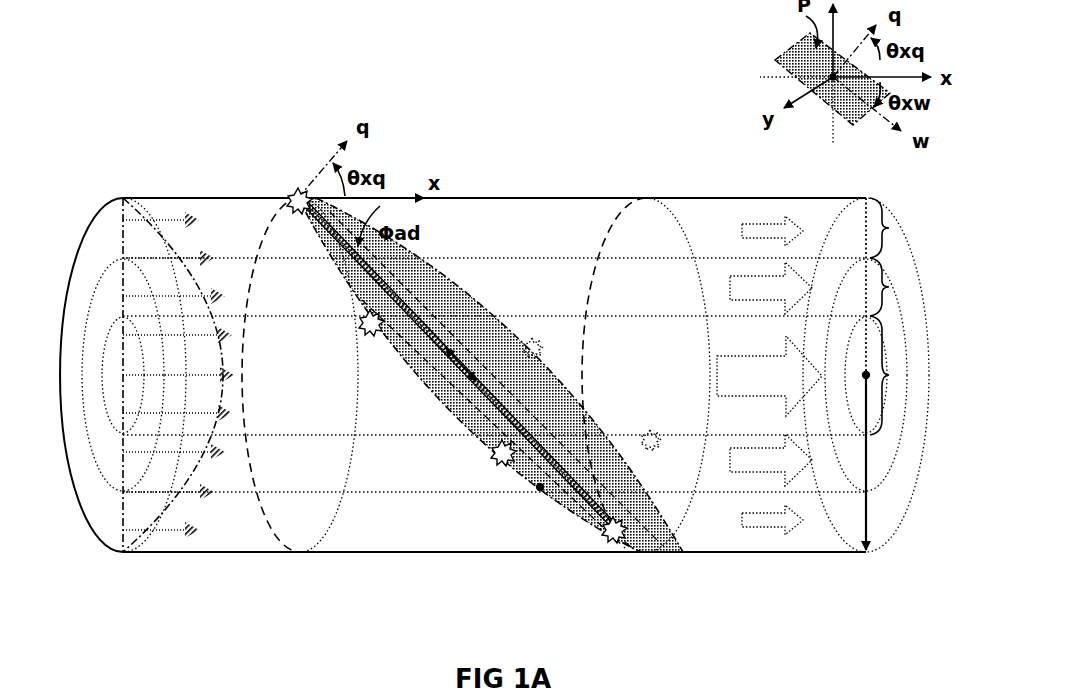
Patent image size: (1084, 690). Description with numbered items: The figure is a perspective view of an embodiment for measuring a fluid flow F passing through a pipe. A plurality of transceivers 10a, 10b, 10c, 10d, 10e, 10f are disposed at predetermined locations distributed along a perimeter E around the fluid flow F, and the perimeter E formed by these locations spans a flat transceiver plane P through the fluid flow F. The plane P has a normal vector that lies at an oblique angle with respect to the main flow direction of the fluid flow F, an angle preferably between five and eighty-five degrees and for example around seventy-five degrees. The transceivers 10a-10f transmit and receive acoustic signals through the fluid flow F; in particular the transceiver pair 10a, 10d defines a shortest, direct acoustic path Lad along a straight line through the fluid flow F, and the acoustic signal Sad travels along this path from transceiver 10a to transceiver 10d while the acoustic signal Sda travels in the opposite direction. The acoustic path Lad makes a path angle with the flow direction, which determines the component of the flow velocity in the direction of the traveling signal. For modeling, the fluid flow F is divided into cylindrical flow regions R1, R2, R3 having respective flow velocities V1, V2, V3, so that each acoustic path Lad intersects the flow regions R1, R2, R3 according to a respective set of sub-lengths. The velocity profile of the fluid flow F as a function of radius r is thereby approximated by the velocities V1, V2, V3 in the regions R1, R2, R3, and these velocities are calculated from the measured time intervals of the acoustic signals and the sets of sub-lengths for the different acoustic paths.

The transceiver 10a is at (296, 190).
The transceiver 10b is at (362, 325).
The transceiver 10c is at (494, 456).
The transceiver 10d is at (606, 535).
The transceiver 10e is at (690, 410).
The transceiver 10f is at (538, 338).
The flat transceiver plane P is at (520, 392).
The perimeter E is at (540, 487).
The fluid flow F is at (171, 390).
The radial position r is at (870, 513).
The flow region R1 is at (899, 375).
The flow region R2 is at (899, 287).
The flow region R3 is at (899, 228).
The flow velocity V1 is at (772, 375).
The flow velocity V2 is at (771, 374).
The flow velocity V3 is at (769, 376).
The acoustic signal Sda is at (452, 340).
The acoustic signal Sad is at (470, 392).
The acoustic path Lad is at (345, 232).